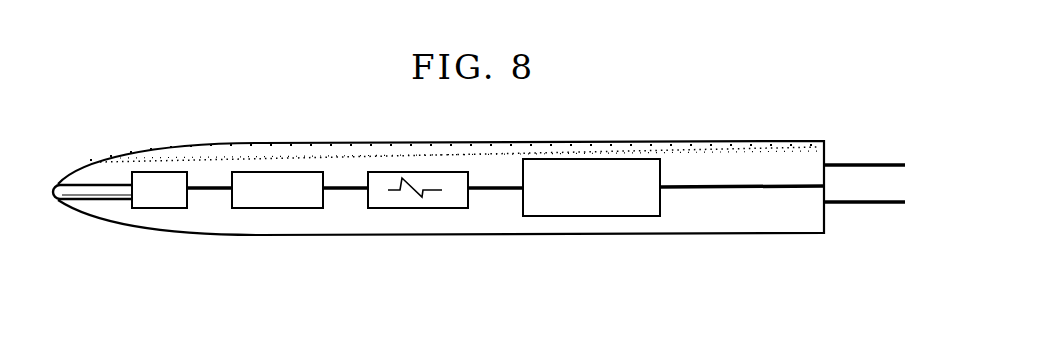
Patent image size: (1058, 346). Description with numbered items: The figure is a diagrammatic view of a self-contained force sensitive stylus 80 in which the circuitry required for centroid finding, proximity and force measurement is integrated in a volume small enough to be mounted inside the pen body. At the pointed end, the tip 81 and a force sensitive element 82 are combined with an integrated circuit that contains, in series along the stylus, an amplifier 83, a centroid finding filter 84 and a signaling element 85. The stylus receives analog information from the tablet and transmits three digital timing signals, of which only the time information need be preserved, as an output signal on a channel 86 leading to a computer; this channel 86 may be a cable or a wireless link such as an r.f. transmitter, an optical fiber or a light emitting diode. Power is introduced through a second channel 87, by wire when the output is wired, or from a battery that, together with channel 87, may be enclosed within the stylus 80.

The stylus 80 is at (738, 287).
The tip 81 is at (56, 183).
The force sensitive element 82 is at (177, 202).
The amplifier 83 is at (307, 200).
The centroid finding filter 84 is at (412, 202).
The signaling element 85 is at (585, 207).
The channel 86 is at (868, 162).
The channel 87 is at (863, 205).